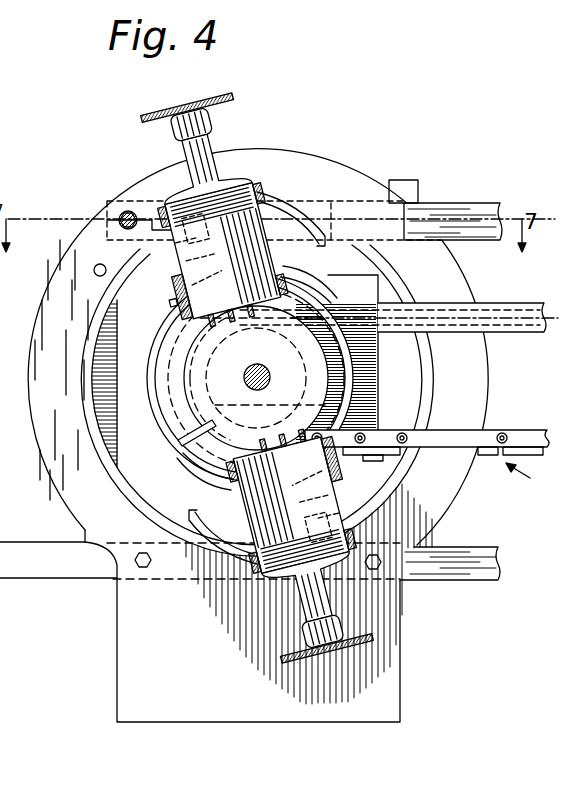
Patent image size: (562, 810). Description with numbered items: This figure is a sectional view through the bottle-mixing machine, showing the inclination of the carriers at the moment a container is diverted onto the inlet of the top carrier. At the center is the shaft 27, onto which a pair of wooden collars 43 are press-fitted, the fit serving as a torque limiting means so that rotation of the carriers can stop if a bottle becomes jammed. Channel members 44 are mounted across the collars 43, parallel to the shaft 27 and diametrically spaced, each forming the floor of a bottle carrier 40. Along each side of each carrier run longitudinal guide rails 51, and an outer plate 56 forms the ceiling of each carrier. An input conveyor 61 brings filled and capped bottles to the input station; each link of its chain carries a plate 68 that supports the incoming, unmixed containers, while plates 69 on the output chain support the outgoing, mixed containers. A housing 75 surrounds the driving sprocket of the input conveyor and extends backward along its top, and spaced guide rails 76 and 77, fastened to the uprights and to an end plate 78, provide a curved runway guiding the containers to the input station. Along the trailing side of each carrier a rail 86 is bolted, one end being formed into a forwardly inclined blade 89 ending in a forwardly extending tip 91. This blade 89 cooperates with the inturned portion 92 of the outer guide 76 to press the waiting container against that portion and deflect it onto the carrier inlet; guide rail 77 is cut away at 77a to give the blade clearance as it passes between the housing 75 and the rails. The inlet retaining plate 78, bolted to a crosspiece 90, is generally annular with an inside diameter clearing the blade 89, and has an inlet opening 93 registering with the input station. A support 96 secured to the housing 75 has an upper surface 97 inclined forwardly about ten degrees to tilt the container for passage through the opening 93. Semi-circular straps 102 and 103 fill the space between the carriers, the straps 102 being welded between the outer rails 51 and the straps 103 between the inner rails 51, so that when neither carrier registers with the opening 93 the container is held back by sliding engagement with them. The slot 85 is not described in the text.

The shaft 27 is at (266, 372).
The bottle carrier 40 is at (247, 156).
The collar 43 is at (318, 376).
The channel member 44 is at (218, 318).
The guide rail 51 is at (262, 193).
The outer plate 56 is at (195, 101).
The input conveyor 61 is at (528, 477).
The plate 68 is at (483, 456).
The plate 69 is at (512, 431).
The housing 75 is at (176, 440).
The guide rail 76 is at (176, 196).
The guide rail 77 is at (447, 210).
The cut-away portion 77a is at (322, 246).
The inlet retaining plate 78 is at (458, 288).
The slot 85 is at (257, 377).
The rail 86 is at (275, 240).
The deflector blade 89 is at (257, 409).
The crosspiece 90 is at (468, 549).
The tip 91 is at (190, 262).
The inturned portion 92 is at (192, 322).
The inlet opening 93 is at (160, 186).
The support 96 is at (175, 301).
The upper surface 97 is at (205, 312).
The semi-circular strap 102 is at (392, 273).
The semi-circular strap 103 is at (318, 292).